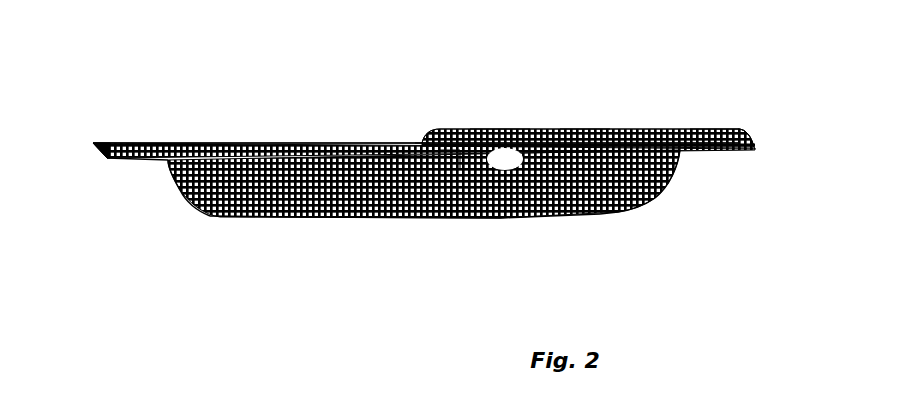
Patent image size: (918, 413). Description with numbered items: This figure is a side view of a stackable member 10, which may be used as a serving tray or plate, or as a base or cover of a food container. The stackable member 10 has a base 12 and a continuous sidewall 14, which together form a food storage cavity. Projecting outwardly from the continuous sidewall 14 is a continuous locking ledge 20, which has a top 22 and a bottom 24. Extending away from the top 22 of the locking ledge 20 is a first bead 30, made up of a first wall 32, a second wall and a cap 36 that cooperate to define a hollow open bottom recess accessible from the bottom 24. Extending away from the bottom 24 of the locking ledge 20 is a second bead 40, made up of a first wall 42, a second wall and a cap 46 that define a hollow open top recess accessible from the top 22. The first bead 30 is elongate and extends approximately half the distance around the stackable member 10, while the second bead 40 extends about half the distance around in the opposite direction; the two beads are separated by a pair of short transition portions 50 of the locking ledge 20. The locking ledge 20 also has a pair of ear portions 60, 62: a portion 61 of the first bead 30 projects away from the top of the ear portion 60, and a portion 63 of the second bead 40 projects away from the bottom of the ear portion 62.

The stackable member 10 is at (217, 105).
The base 12 is at (495, 218).
The continuous sidewall 14 is at (673, 170).
The continuous locking ledge 20 is at (450, 152).
The top of locking ledge 22 is at (330, 142).
The bottom of locking ledge 24 is at (617, 212).
The first bead 30 is at (608, 104).
The first wall of first bead 32 is at (578, 131).
The cap of first bead 36 is at (498, 128).
The second bead 40 is at (203, 208).
The first wall of second bead 42 is at (283, 215).
The cap of second bead 46 is at (345, 215).
The transition portions 50 is at (415, 137).
The first ear portion 60 is at (733, 109).
The portion of first bead 61 is at (702, 126).
The second ear portion 62 is at (103, 123).
The portion of second bead 63 is at (120, 160).